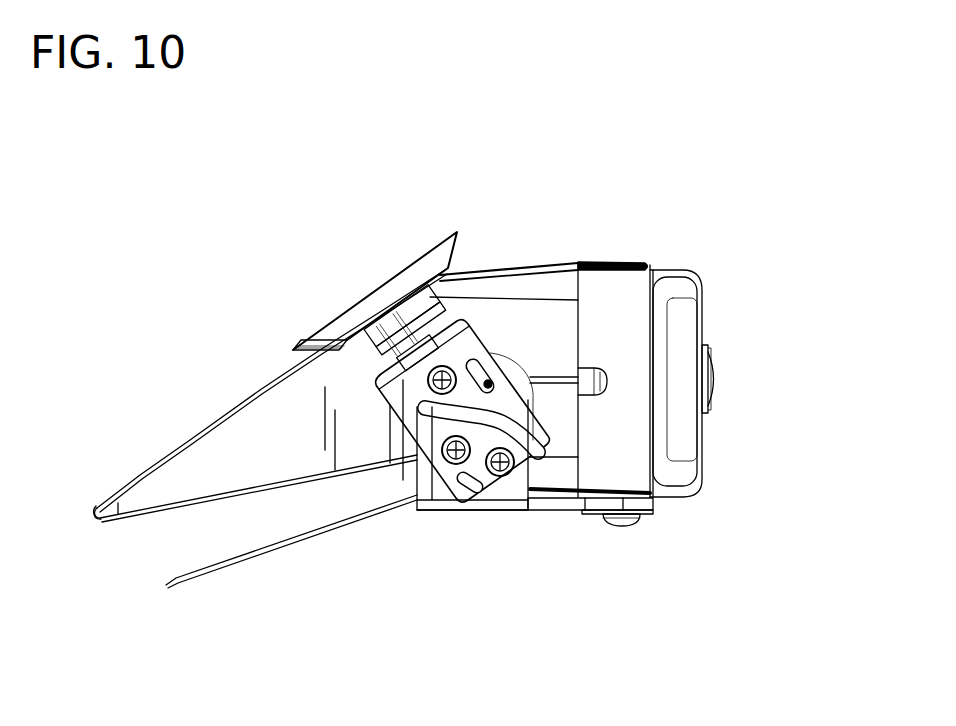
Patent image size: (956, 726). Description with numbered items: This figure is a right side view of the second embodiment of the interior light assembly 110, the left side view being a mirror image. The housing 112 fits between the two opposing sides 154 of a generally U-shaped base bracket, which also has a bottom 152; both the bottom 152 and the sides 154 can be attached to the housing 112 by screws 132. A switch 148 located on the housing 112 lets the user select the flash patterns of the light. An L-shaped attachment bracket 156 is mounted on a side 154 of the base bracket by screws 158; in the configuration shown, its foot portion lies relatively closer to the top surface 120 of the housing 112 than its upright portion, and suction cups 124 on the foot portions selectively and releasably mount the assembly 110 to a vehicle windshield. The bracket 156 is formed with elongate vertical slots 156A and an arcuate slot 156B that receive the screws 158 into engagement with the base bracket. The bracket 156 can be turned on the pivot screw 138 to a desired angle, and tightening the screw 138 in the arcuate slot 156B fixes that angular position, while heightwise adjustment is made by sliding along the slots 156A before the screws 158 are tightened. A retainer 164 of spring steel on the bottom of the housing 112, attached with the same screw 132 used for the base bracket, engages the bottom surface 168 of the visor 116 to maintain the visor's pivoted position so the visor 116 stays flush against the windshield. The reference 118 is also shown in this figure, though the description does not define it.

The interior light assembly 110 is at (103, 297).
The housing 112 is at (623, 324).
The visor 116 is at (163, 483).
The mounting block 118 is at (447, 524).
The top surface 120 is at (518, 268).
The suction cup 124 is at (410, 277).
The screw 132 is at (626, 522).
The pivot screw 138 is at (442, 377).
The switch 148 is at (716, 388).
The bottom 152 is at (582, 503).
The side 154 is at (413, 517).
The attachment bracket 156 is at (740, 453).
The elongate vertical slot 156A is at (644, 418).
The arcuate slot 156B is at (440, 462).
The screw 158 is at (457, 438).
The retainer 164 is at (212, 568).
The bottom surface 168 is at (158, 513).